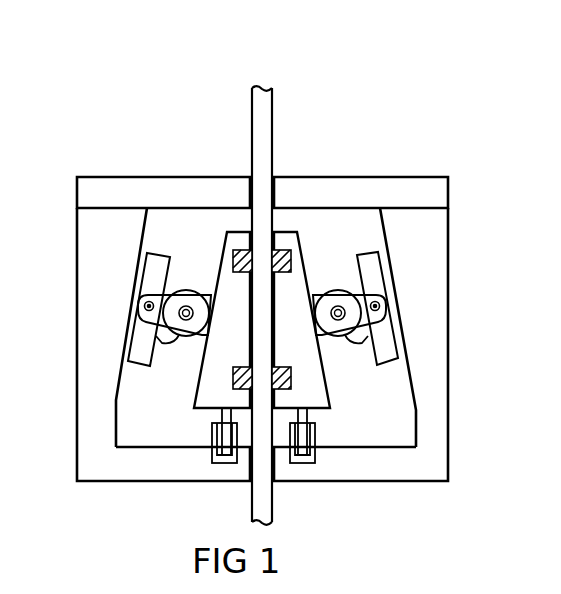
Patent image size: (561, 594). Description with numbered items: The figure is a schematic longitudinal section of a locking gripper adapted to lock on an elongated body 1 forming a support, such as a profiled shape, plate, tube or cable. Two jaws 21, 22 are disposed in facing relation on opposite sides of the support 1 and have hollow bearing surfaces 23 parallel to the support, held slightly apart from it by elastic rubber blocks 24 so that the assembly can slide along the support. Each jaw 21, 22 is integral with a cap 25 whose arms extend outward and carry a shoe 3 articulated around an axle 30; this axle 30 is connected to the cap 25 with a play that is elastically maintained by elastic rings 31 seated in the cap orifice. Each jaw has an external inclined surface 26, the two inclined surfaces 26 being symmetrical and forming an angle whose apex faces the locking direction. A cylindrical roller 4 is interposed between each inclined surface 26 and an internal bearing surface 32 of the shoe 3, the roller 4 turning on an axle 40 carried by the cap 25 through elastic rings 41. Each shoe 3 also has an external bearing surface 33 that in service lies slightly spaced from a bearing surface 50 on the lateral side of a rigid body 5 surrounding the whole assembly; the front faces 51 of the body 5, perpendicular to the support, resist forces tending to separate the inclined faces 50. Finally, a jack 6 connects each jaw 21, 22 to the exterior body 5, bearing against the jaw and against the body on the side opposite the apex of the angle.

The elongated body 1 is at (255, 122).
The shoe 3 is at (382, 352).
The cylindrical roller 4 is at (172, 257).
The rigid body 5 is at (145, 468).
The jack 6 is at (300, 460).
The jaw 21 is at (285, 242).
The jaw 22 is at (240, 235).
The bearing surface 23 is at (233, 278).
The rubber block 24 is at (233, 253).
The cap 25 is at (163, 322).
The inclined surface 26 is at (225, 234).
The axle 30 is at (150, 309).
The elastic ring 31 is at (143, 290).
The internal bearing surface 32 is at (147, 253).
The external bearing surface 33 is at (393, 343).
The axle 40 is at (200, 305).
The elastic ring 41 is at (170, 312).
The bearing surface 50 is at (113, 405).
The front face 51 is at (292, 188).